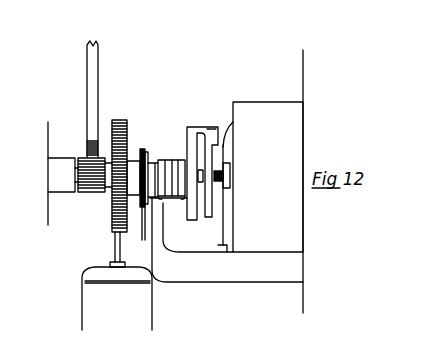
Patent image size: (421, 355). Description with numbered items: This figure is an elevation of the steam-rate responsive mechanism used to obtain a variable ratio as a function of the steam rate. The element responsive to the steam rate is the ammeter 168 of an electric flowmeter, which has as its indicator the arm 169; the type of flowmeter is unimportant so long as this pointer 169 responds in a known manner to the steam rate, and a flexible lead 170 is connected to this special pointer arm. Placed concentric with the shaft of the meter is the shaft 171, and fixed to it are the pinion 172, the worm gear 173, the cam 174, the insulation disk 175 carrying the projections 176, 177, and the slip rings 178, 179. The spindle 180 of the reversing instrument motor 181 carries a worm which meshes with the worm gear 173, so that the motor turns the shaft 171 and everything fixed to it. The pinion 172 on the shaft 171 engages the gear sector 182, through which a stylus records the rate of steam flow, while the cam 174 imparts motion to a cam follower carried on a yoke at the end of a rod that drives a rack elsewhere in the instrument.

The ammeter 168 is at (268, 177).
The arm 169 is at (231, 130).
The flexible lead 170 is at (222, 238).
The shaft 171 is at (164, 147).
The pinion 172 is at (90, 193).
The worm gear 173 is at (112, 226).
The cam 174 is at (140, 237).
The insulation disk 175 is at (195, 127).
The projection 176 is at (214, 127).
The projection 177 is at (209, 127).
The slip ring 178 is at (180, 158).
The slip ring 179 is at (168, 158).
The spindle 180 is at (112, 256).
The reversing instrument motor 181 is at (80, 289).
The gear sector 182 is at (87, 80).